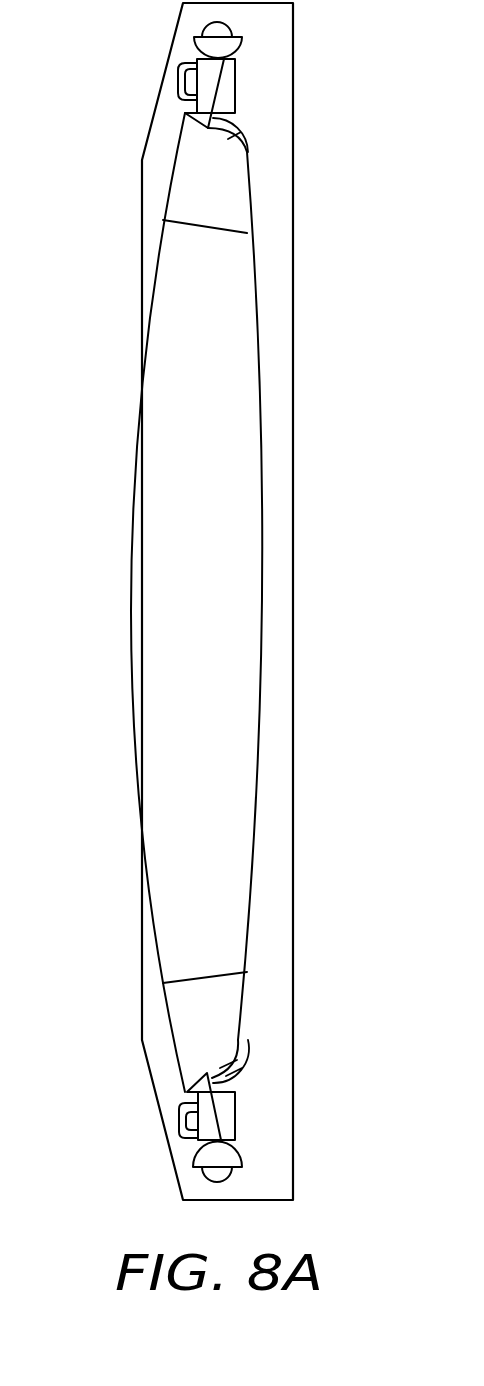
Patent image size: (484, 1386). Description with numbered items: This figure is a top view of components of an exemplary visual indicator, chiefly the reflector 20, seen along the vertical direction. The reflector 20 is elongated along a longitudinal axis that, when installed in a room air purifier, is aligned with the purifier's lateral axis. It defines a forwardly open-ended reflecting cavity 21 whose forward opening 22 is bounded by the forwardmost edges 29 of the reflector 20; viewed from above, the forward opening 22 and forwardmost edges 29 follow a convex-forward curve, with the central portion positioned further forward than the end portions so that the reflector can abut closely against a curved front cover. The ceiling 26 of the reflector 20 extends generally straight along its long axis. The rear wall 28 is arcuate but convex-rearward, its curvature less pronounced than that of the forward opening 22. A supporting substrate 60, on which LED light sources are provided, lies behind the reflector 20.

The reflector 20 is at (163, 608).
The forwardly open-ended reflecting cavity 21 is at (166, 449).
The forward opening 22 is at (118, 682).
The ceiling 26 is at (167, 790).
The rear wall 28 is at (258, 757).
The forwardmost edges 29 is at (132, 537).
The supporting substrate 60 is at (278, 524).